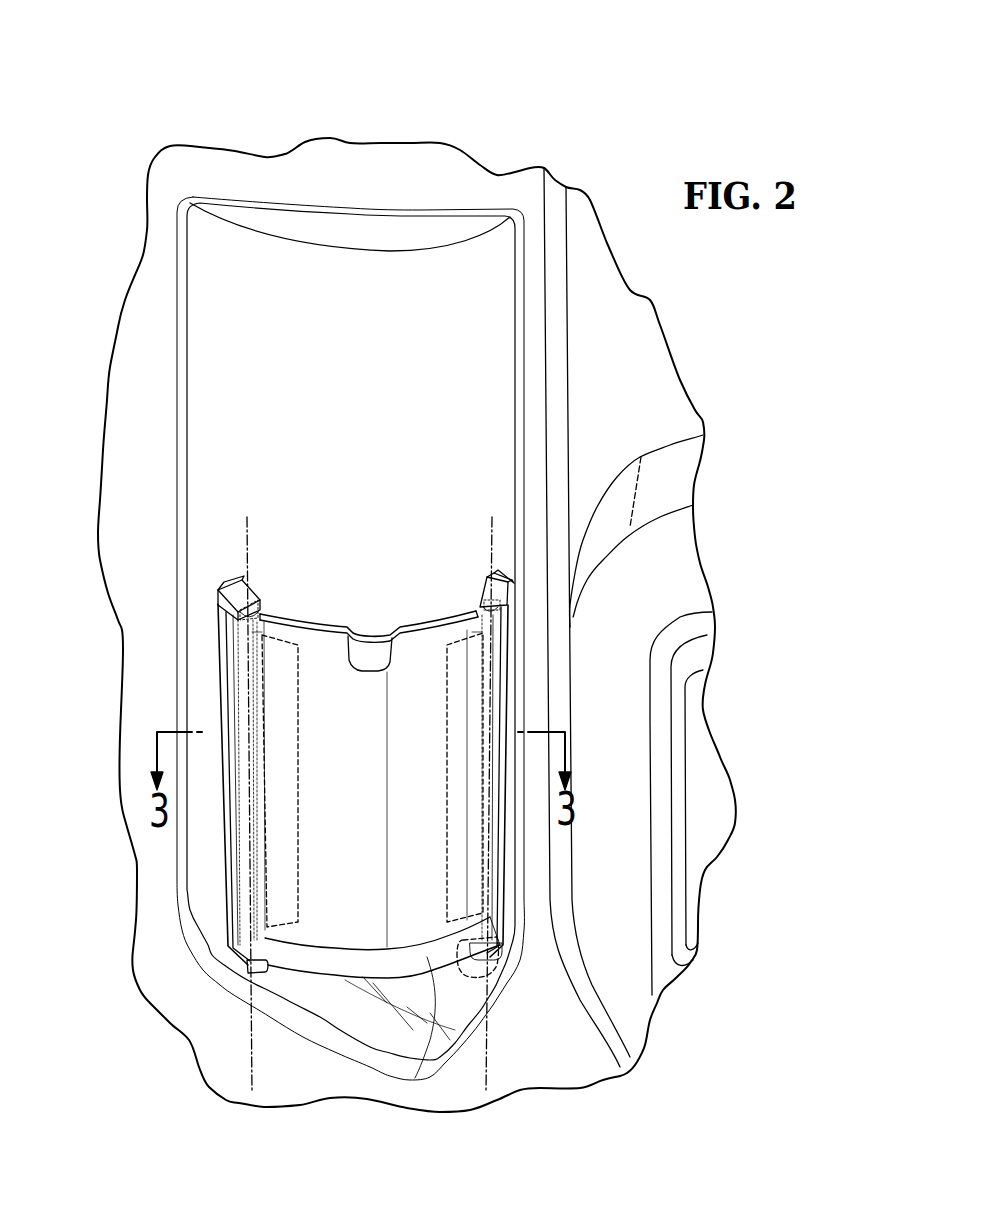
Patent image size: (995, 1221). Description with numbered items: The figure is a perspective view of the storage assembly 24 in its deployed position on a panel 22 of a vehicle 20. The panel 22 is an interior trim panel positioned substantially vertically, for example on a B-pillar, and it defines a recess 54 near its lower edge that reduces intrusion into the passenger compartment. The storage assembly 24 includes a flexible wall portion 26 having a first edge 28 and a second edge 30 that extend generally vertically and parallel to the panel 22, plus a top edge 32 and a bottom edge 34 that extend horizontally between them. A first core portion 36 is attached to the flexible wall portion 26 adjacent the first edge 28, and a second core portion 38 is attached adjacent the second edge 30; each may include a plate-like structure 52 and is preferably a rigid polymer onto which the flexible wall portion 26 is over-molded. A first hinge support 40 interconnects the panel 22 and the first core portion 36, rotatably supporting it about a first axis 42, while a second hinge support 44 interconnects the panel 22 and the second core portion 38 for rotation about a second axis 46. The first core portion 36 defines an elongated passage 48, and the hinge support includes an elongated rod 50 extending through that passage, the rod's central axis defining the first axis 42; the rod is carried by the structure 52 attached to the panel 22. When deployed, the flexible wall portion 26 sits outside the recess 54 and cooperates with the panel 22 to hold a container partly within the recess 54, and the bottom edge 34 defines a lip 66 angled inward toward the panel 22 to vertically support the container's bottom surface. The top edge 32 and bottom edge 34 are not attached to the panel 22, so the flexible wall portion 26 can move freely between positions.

The vehicle 20 is at (588, 130).
The panel 22 is at (172, 162).
The storage assembly 24 is at (433, 611).
The flexible wall portion 26 is at (347, 923).
The first edge 28 is at (238, 868).
The second edge 30 is at (503, 680).
The top edge 32 is at (317, 624).
The bottom edge 34 is at (383, 977).
The first core portion 36 is at (300, 680).
The second core portion 38 is at (447, 773).
The first hinge support 40 is at (258, 584).
The first axis 42 is at (253, 1037).
The second hinge support 44 is at (480, 578).
The second axis 46 is at (487, 1047).
The elongated passage 48 is at (259, 601).
The elongated rod 50 is at (236, 928).
The structure 52 is at (500, 577).
The recess 54 is at (206, 322).
The lip 66 is at (427, 957).